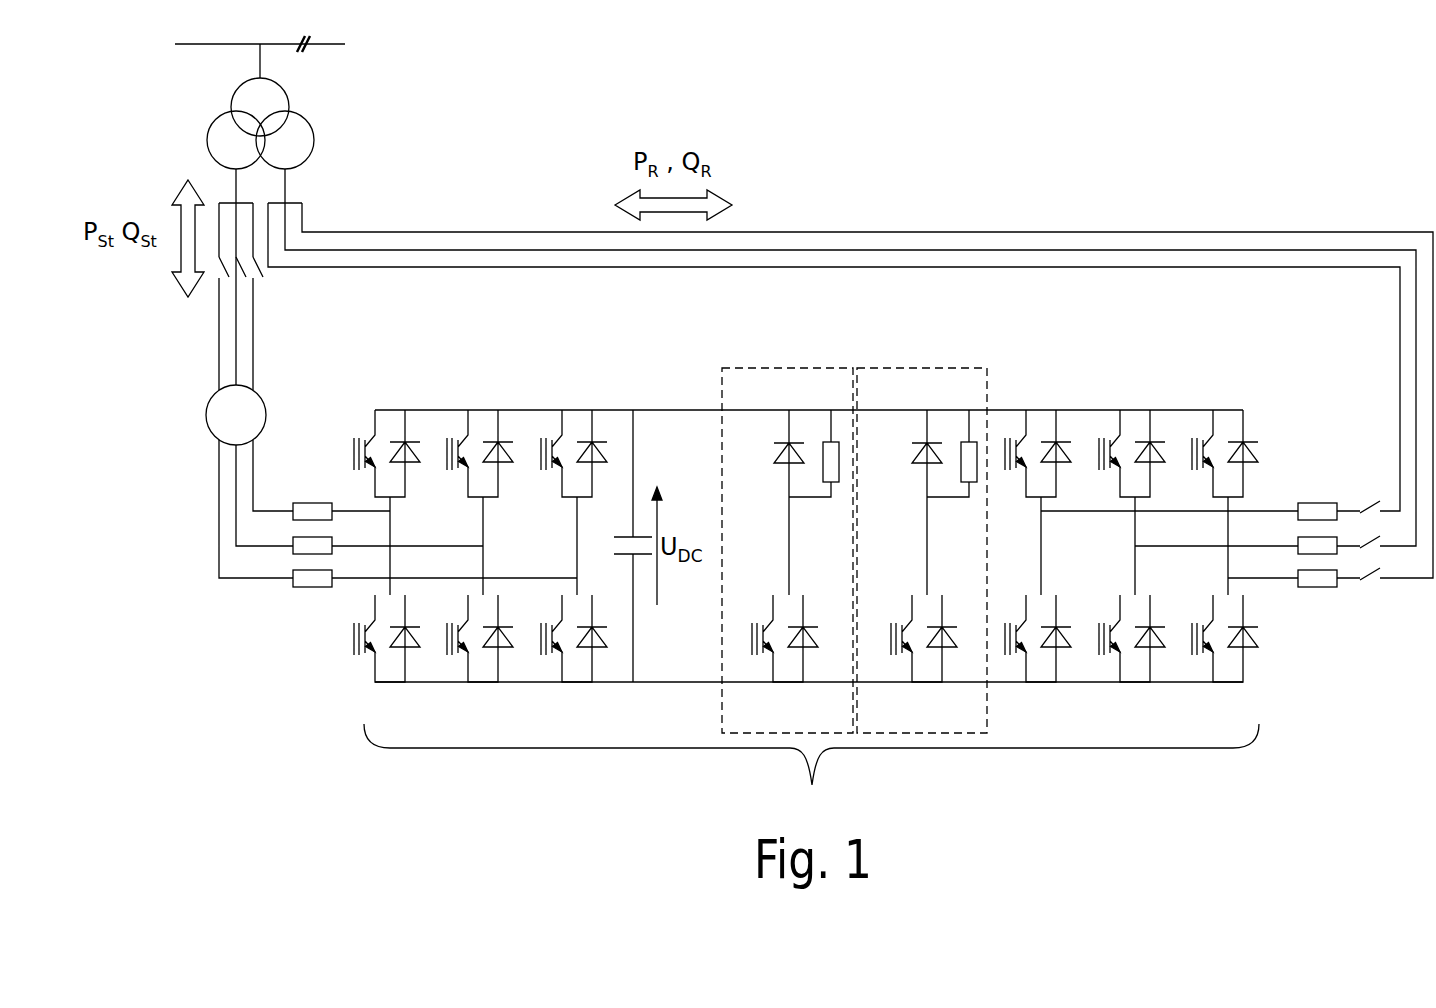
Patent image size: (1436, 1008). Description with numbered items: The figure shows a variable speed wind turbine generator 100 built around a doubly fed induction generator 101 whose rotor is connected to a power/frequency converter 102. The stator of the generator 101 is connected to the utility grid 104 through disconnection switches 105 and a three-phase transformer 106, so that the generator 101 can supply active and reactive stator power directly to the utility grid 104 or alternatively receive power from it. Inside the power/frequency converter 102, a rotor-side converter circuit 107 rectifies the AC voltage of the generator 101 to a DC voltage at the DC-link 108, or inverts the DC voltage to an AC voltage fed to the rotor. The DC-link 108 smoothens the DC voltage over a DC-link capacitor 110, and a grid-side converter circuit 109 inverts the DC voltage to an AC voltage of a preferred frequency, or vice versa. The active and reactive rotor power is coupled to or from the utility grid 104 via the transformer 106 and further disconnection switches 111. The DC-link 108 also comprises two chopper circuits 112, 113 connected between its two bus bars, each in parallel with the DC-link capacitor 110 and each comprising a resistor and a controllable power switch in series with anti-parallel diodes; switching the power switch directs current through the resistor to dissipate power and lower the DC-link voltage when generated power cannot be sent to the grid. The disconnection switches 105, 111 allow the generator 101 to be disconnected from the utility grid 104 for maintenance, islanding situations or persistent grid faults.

The variable speed wind turbine generator 100 is at (1000, 131).
The doubly fed induction generator 101 is at (205, 400).
The power/frequency converter 102 is at (811, 772).
The utility grid 104 is at (340, 45).
The disconnection switches 105 is at (263, 277).
The three-phase transformer 106 is at (211, 125).
The rotor-side converter circuit 107 is at (532, 402).
The DC-link 108 is at (665, 402).
The grid-side converter circuit 109 is at (1133, 400).
The DC-link capacitor 110 is at (647, 593).
The disconnection switches 111 is at (1372, 586).
The chopper circuit 112 is at (778, 368).
The chopper circuit 113 is at (913, 368).